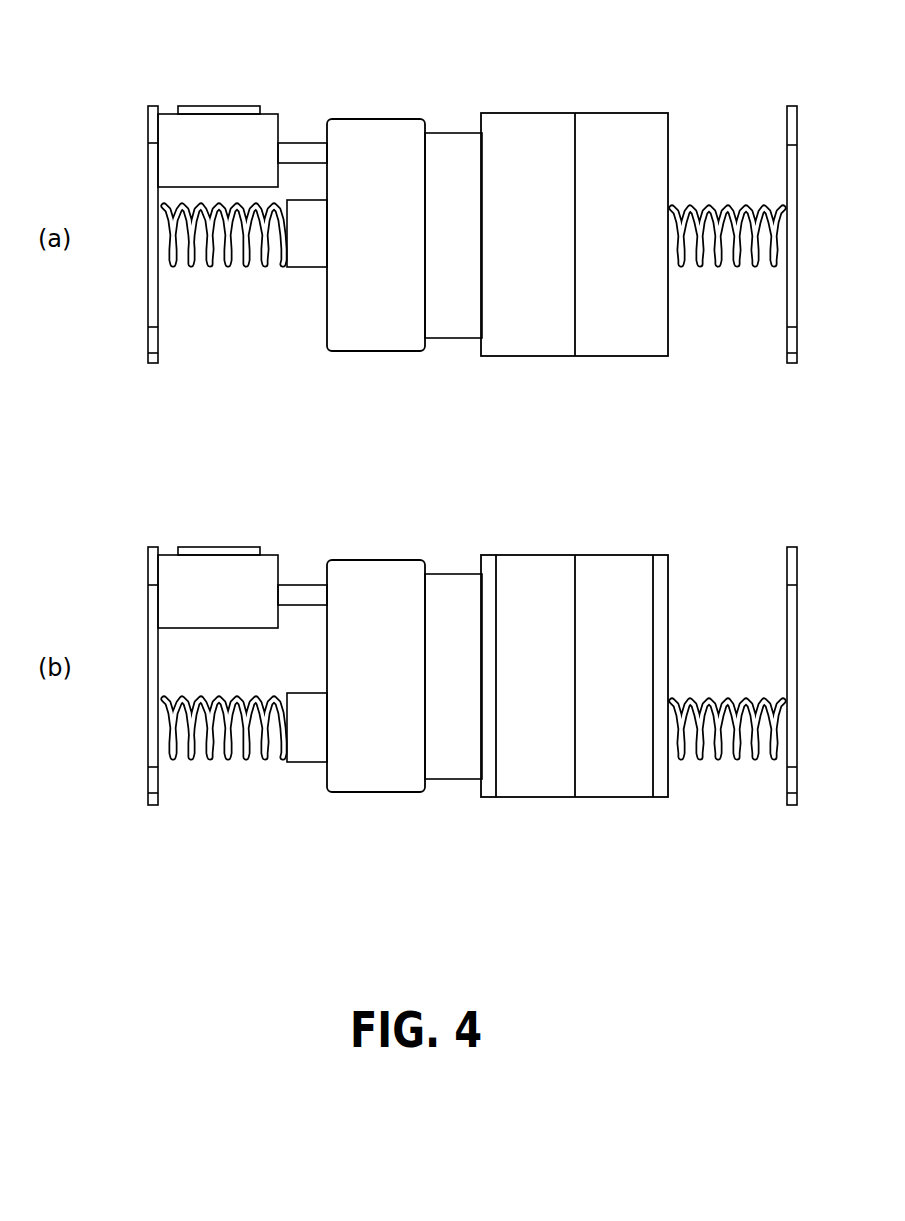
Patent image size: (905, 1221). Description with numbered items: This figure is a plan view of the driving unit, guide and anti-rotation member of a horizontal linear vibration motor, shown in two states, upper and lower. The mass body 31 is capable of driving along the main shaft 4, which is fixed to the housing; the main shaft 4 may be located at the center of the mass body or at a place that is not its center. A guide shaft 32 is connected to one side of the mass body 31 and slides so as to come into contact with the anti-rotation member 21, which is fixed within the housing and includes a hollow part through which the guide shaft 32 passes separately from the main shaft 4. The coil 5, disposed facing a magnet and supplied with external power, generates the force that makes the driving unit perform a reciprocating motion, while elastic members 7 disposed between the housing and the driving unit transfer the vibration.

The anti-rotation member 21 is at (270, 130).
The guide shaft 32 is at (305, 150).
The mass body 31 is at (385, 137).
The coil 5 is at (548, 131).
The main shaft 4 is at (232, 758).
The elastic member 7 is at (208, 268).